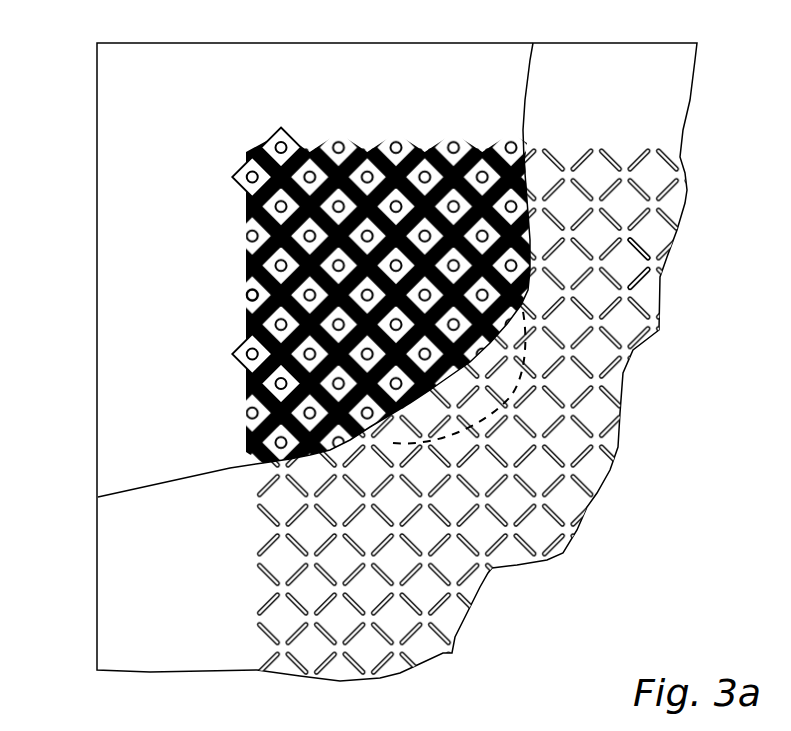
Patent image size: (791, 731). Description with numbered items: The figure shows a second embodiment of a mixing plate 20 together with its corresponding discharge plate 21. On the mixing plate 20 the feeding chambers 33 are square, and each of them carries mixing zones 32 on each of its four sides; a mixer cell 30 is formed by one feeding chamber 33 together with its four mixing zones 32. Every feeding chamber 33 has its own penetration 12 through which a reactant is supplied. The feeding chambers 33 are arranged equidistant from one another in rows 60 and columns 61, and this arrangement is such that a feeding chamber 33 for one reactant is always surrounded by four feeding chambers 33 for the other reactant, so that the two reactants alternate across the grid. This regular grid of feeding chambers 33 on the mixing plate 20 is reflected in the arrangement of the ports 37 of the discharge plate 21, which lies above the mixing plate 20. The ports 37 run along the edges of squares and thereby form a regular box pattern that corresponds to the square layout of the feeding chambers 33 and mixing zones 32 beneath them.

The penetration 12 is at (258, 300).
The mixing plate 20 is at (503, 80).
The discharge plate 21 is at (647, 113).
The mixer cell 30 is at (244, 330).
The mixing zone 32 is at (247, 389).
The feeding chamber 33 is at (247, 362).
The port 37 is at (643, 287).
The row 60 is at (224, 147).
The column 61 is at (248, 118).